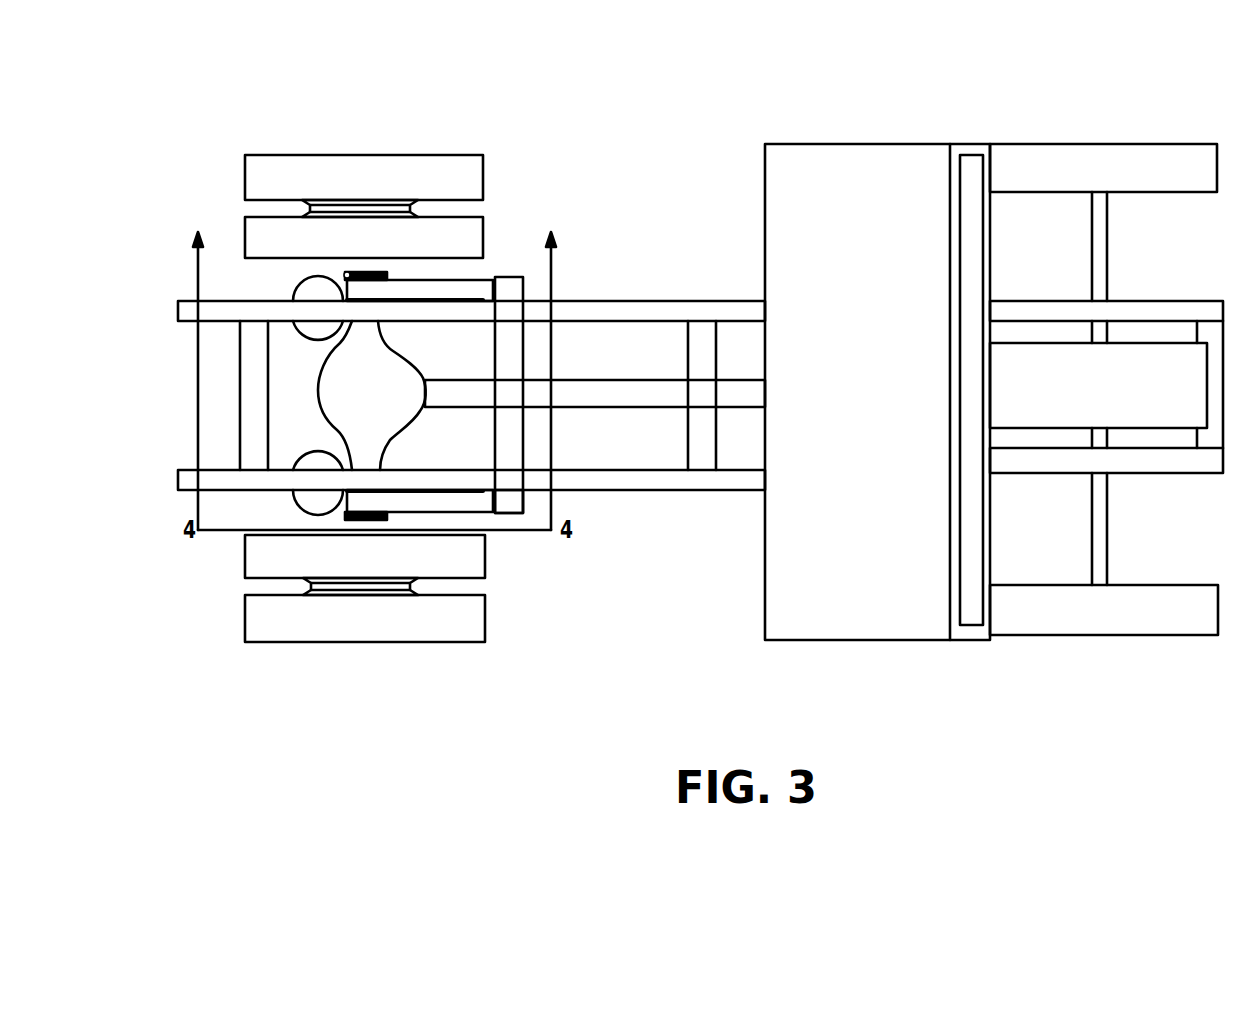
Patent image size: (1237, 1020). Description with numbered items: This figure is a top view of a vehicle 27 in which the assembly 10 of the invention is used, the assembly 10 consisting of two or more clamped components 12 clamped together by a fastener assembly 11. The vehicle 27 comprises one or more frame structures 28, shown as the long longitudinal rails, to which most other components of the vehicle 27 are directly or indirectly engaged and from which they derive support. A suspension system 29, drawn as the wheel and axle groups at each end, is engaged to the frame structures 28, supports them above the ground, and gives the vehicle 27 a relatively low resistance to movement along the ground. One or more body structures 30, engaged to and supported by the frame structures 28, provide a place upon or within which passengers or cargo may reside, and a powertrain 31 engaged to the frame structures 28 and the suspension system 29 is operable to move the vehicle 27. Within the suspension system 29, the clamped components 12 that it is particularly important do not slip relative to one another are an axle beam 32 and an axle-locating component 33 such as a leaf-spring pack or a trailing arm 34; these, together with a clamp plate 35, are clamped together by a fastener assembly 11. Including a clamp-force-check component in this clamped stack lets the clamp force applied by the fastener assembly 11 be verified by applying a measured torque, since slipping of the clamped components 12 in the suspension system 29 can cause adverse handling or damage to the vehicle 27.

The assembly 10 is at (363, 502).
The fastener assembly 11 is at (387, 515).
The clamped components 12 is at (350, 512).
The vehicle 27 is at (816, 155).
The frame structures 28 is at (657, 307).
The suspension system 29 is at (392, 373).
The body structures 30 is at (890, 175).
The powertrain 31 is at (625, 390).
The axle beam 32 is at (345, 275).
The axle-locating component 33 is at (392, 293).
The trailing arm 34 is at (410, 295).
The clamp plate 35 is at (383, 277).